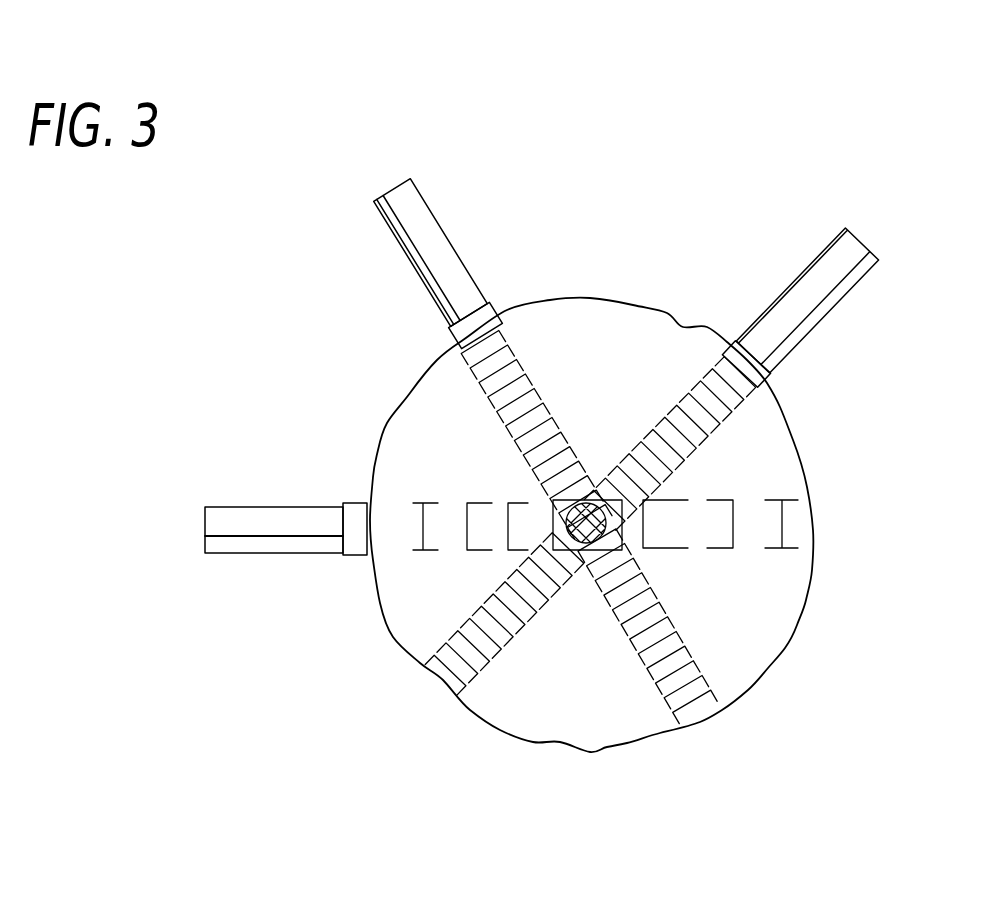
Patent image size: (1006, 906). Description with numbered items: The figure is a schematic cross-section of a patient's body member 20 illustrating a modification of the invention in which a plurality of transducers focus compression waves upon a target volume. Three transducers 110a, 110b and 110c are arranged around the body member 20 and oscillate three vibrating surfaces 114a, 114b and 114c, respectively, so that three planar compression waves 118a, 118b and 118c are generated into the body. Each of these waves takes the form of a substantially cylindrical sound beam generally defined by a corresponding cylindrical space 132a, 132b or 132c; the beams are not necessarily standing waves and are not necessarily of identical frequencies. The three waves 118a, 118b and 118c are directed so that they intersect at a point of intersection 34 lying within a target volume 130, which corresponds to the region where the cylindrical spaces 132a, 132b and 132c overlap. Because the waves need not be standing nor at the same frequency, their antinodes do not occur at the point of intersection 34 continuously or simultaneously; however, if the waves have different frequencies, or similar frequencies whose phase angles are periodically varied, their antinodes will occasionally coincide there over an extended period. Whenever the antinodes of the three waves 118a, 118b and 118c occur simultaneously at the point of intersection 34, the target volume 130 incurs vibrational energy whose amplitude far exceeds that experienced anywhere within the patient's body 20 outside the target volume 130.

The patient's body member 20 is at (758, 652).
The point of intersection 34 is at (616, 500).
The target volume 130 is at (622, 524).
The transducer 110a is at (852, 278).
The transducer 110b is at (421, 229).
The transducer 110c is at (237, 528).
The vibrating surface 114a is at (754, 356).
The vibrating surface 114b is at (487, 313).
The vibrating surface 114c is at (342, 532).
The planar compression wave 118a is at (740, 393).
The planar compression wave 118b is at (465, 360).
The planar compression wave 118c is at (415, 522).
The cylindrical space 132a is at (743, 444).
The cylindrical space 132b is at (448, 435).
The cylindrical space 132c is at (445, 558).